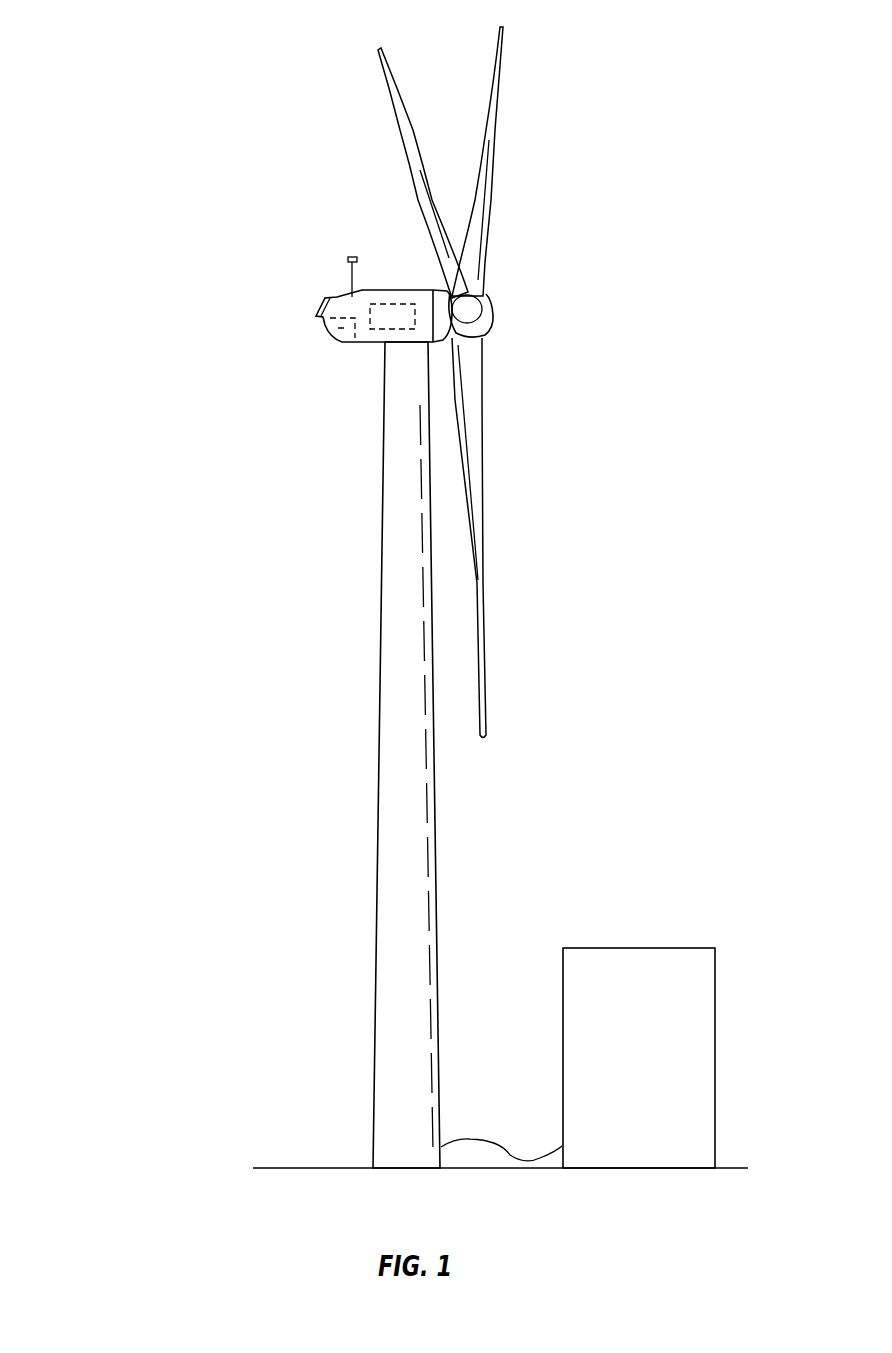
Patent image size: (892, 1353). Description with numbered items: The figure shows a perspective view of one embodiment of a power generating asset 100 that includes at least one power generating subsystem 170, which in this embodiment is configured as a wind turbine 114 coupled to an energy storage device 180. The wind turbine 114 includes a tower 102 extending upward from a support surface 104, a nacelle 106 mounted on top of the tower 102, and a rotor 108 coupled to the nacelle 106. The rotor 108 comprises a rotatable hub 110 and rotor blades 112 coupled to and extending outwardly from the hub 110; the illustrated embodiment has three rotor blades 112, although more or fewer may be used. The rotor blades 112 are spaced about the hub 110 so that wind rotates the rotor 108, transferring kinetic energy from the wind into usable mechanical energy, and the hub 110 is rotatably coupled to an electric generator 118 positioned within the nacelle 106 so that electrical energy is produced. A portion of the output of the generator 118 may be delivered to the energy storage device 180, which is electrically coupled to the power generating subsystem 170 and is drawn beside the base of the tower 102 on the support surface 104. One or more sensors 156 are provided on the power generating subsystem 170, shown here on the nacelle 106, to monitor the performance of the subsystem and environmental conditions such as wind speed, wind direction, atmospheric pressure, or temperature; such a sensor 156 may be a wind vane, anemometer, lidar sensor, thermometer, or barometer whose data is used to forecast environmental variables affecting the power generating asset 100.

The power generating asset 100 is at (150, 136).
The tower 102 is at (418, 823).
The support surface 104 is at (355, 1168).
The nacelle 106 is at (362, 345).
The rotor 108 is at (540, 265).
The rotatable hub 110 is at (493, 312).
The rotor blade 112 is at (414, 143).
The wind turbine 114 is at (638, 120).
The generator 118 is at (397, 303).
The sensor 156 is at (349, 252).
The power generating subsystem 170 is at (634, 106).
The energy storage device 180 is at (707, 997).